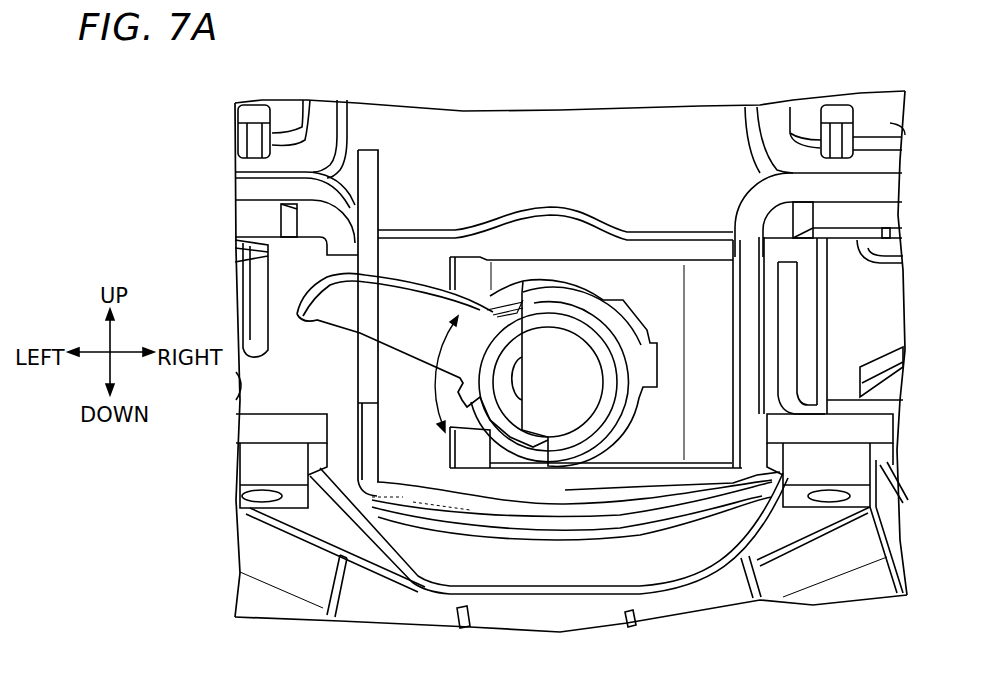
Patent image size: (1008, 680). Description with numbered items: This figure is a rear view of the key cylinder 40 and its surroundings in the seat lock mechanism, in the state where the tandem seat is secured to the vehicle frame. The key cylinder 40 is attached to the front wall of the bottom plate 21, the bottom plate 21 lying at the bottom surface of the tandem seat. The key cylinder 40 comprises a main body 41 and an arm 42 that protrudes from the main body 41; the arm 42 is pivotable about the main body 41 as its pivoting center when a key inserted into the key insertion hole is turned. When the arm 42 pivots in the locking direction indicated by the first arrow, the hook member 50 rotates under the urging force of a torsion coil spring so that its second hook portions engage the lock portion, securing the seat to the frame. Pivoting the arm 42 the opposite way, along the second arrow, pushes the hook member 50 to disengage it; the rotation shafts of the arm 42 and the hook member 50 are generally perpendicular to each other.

The hook member 50 is at (367, 305).
The bottom plate 21 is at (655, 323).
The key cylinder 40 is at (538, 55).
The main body 41 is at (547, 367).
The arm 42 is at (418, 317).